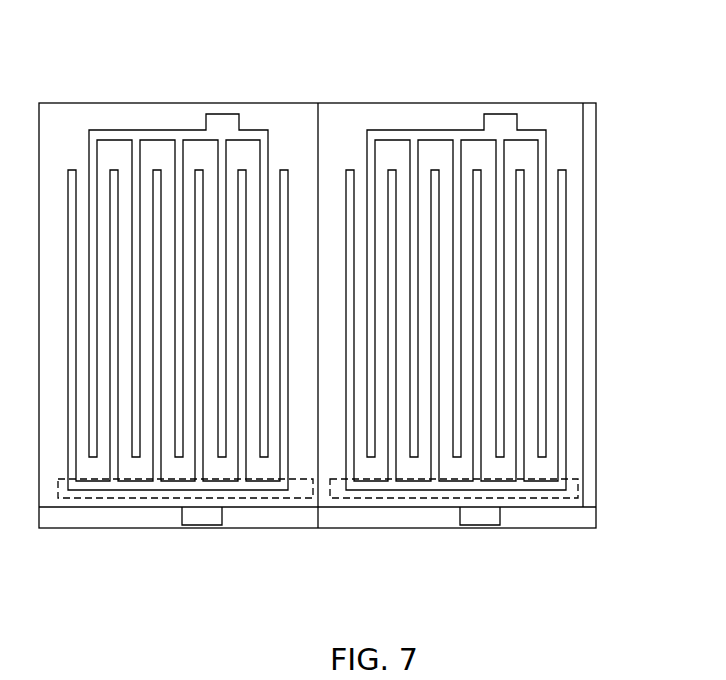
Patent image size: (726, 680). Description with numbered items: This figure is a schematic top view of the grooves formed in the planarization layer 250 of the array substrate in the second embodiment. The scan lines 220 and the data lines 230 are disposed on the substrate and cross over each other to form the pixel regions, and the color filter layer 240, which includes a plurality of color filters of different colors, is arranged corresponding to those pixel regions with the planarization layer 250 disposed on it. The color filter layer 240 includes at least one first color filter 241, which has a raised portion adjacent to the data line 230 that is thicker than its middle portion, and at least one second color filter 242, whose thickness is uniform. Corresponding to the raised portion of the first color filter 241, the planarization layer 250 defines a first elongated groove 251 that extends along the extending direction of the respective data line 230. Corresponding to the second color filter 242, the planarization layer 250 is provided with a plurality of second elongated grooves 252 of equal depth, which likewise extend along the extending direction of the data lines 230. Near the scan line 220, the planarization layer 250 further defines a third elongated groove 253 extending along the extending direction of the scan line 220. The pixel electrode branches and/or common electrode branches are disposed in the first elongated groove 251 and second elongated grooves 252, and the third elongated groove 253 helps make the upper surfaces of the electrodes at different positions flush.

The scan line 220 is at (575, 516).
The data line 230 is at (592, 455).
The color filter layer 240 is at (340, 48).
The first color filter 241 is at (343, 132).
The second color filter 242 is at (281, 131).
The planarization layer 250 is at (567, 142).
The first elongated groove 251 is at (350, 442).
The second elongated groove 252 is at (292, 447).
The third elongated groove 253 is at (188, 498).